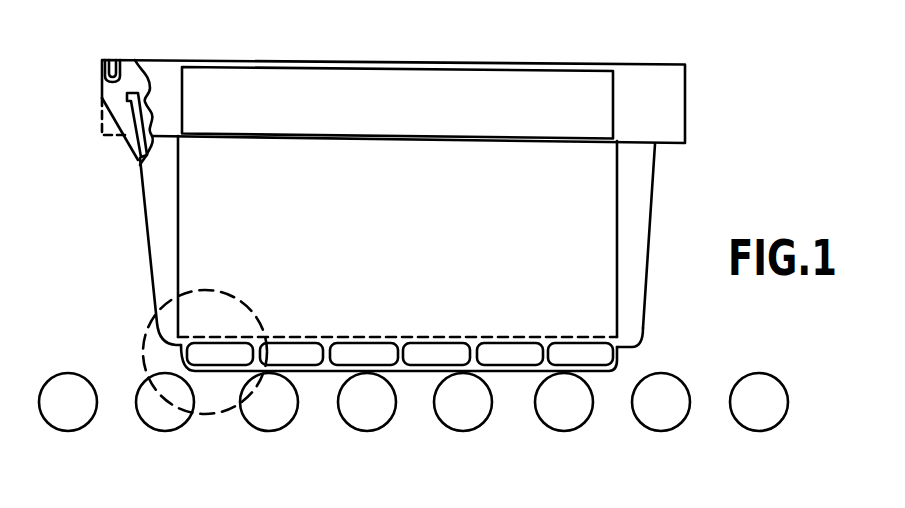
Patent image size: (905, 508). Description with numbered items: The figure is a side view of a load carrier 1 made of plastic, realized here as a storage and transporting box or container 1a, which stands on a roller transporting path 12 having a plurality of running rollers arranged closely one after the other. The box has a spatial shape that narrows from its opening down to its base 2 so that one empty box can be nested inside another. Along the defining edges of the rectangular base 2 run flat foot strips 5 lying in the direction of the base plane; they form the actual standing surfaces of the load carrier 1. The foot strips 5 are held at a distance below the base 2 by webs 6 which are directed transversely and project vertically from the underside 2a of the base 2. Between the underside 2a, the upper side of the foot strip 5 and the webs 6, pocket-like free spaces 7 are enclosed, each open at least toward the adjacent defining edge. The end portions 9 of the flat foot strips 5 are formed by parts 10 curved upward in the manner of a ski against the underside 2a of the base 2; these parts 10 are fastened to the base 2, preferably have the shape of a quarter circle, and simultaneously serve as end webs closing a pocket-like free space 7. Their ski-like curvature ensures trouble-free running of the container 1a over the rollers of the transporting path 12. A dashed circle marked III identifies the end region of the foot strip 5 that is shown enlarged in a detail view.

The load carrier 1 is at (92, 66).
The storage and transporting box or container 1a is at (658, 160).
The base 2 is at (356, 336).
The underside of the base 2a is at (638, 347).
The flat foot strip 5 is at (418, 373).
The web 6 is at (325, 353).
The free space 7 is at (227, 355).
The end portion 9 is at (204, 380).
The part curved upward 10 is at (177, 358).
The roller transporting path 12 is at (56, 360).
The detail circle III is at (148, 320).